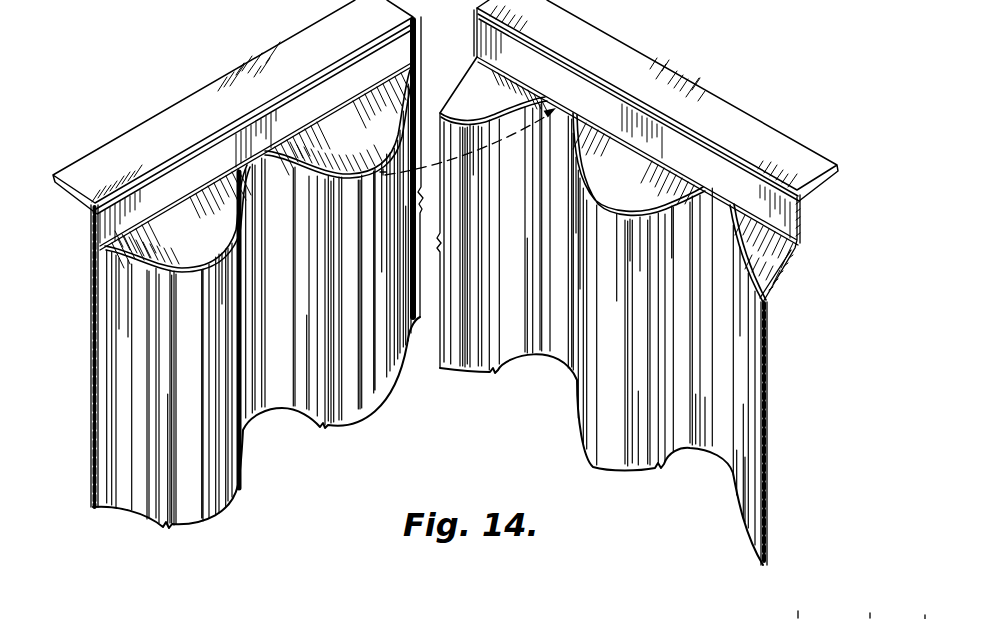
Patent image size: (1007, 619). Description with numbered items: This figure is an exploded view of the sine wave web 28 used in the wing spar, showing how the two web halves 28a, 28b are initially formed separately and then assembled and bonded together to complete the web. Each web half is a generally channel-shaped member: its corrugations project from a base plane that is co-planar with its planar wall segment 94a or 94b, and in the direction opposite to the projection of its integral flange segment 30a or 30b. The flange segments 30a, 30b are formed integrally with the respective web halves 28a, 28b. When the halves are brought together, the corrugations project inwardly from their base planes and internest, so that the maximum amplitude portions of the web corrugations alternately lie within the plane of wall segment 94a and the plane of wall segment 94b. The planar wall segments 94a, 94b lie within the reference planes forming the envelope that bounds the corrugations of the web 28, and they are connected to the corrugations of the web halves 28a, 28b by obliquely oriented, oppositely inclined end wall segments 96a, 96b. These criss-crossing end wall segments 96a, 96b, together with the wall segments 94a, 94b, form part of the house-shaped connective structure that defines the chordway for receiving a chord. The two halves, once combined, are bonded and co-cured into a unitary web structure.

The sine wave web 28 is at (226, 64).
The web half 28a is at (92, 407).
The web half 28b is at (771, 376).
The flange segment 30a is at (102, 157).
The flange segment 30b is at (780, 143).
The planar wall segment 94a is at (86, 230).
The planar wall segment 94b is at (801, 211).
The end wall segment 96a is at (211, 240).
The end wall segment 96b is at (452, 75).